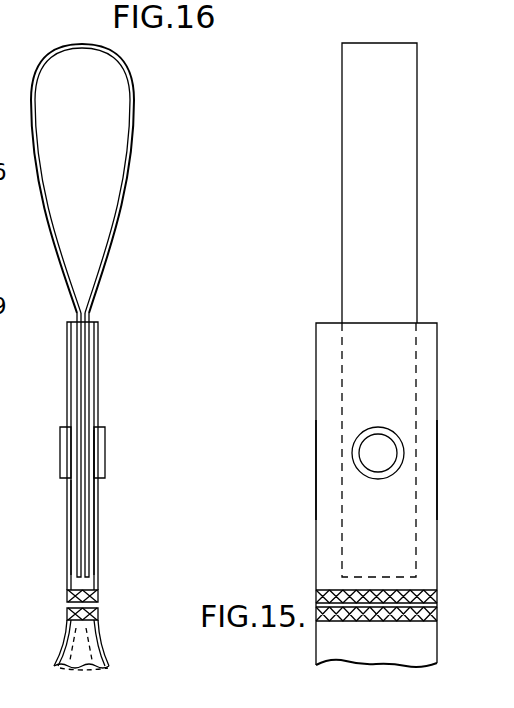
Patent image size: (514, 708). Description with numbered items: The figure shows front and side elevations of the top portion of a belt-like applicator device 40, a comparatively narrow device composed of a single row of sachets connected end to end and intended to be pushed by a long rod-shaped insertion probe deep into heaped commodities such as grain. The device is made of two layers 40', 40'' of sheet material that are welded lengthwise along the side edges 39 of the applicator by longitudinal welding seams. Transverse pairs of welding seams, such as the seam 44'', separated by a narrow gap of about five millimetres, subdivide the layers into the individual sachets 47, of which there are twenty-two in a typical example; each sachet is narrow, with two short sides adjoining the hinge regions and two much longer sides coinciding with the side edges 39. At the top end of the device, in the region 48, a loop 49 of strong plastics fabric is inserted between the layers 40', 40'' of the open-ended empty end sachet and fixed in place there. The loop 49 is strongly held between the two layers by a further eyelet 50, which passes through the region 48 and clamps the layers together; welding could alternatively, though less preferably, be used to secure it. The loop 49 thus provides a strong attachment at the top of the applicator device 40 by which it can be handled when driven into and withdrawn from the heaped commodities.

In FIG. 16, the loop 49 is at (135, 88).
In FIG. 15, the loop 49 is at (417, 87).
In FIG. 16, the region 48 is at (85, 358).
In FIG. 15, the region 48 is at (430, 350).
In FIG. 16, the eyelet 50 is at (104, 440).
In FIG. 15, the eyelet 50 is at (403, 452).
In FIG. 16, the layer 40'' is at (125, 502).
In FIG. 16, the layer 40' is at (48, 527).
In FIG. 16, the transverse welding seam 44'' is at (111, 599).
In FIG. 15, the transverse welding seam 44'' is at (404, 596).
In FIG. 16, the belt-like applicator device 40 is at (58, 648).
In FIG. 15, the belt-like applicator device 40 is at (400, 641).
In FIG. 16, the sachet 47 is at (105, 672).
In FIG. 15, the side edge 39 is at (437, 500).